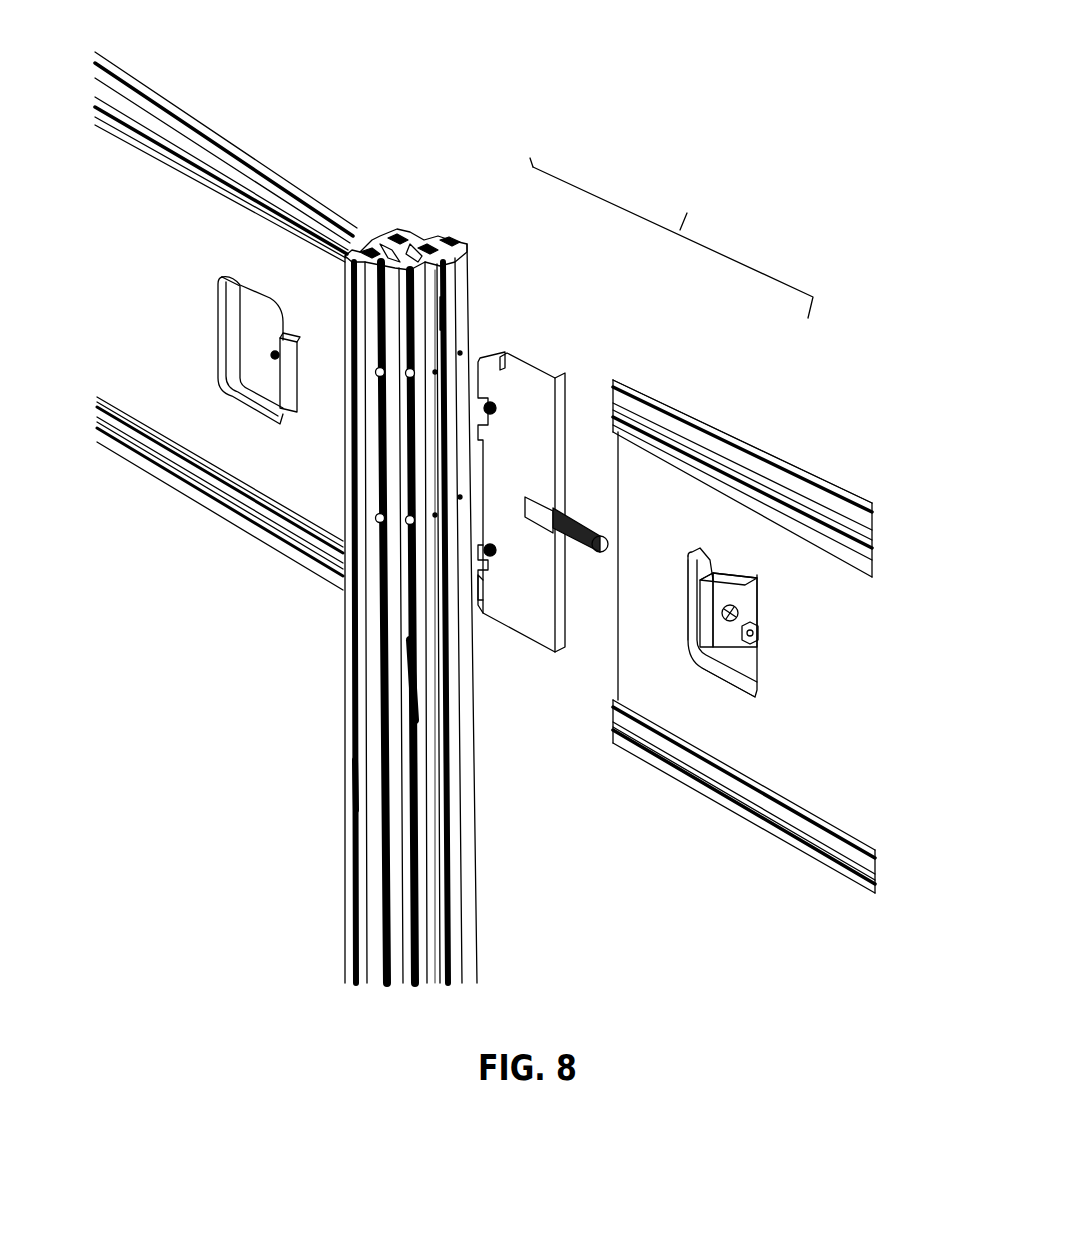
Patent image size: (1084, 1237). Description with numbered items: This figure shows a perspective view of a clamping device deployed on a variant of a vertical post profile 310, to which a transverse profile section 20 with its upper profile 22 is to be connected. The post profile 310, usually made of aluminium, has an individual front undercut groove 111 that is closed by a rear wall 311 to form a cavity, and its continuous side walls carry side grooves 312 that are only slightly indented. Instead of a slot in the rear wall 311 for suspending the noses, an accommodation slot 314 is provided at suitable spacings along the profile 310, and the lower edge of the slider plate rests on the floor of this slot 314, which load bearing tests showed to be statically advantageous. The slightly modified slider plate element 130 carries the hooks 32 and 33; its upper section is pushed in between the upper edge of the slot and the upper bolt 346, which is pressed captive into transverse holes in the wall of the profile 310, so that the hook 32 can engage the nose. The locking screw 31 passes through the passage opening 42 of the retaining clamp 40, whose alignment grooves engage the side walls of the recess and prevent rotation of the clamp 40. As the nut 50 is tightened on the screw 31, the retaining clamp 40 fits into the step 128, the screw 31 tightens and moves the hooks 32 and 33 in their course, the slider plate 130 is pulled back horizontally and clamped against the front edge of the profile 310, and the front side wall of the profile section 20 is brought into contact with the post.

The profile section 20 is at (168, 205).
The upper profile 22 is at (684, 405).
The locking screw 31 is at (584, 547).
The hook 32 is at (492, 404).
The hook 33 is at (492, 552).
The retaining clamp 40 is at (732, 596).
The passage opening 42 is at (740, 612).
The nut 50 is at (722, 655).
The front undercut groove 111 is at (363, 787).
The step 128 is at (687, 600).
The slider plate element 130 is at (518, 377).
The vertical post profile 310 is at (377, 847).
The rear wall 311 is at (447, 232).
The side grooves 312 is at (413, 677).
The accommodation slot 314 is at (440, 328).
The upper bolt 346 is at (410, 521).